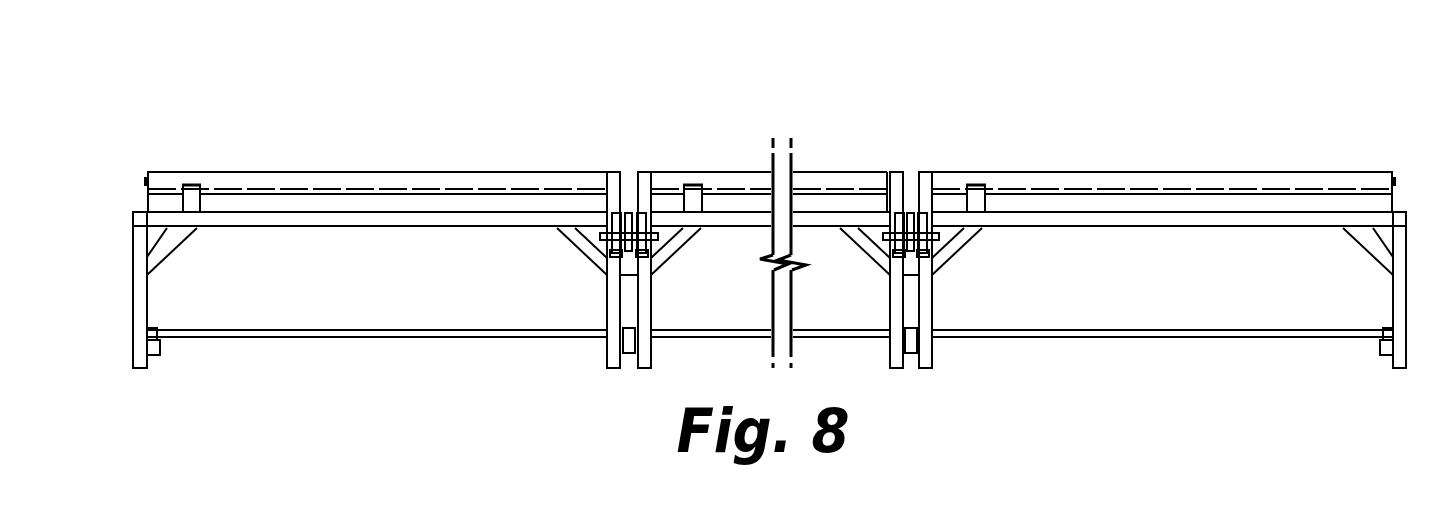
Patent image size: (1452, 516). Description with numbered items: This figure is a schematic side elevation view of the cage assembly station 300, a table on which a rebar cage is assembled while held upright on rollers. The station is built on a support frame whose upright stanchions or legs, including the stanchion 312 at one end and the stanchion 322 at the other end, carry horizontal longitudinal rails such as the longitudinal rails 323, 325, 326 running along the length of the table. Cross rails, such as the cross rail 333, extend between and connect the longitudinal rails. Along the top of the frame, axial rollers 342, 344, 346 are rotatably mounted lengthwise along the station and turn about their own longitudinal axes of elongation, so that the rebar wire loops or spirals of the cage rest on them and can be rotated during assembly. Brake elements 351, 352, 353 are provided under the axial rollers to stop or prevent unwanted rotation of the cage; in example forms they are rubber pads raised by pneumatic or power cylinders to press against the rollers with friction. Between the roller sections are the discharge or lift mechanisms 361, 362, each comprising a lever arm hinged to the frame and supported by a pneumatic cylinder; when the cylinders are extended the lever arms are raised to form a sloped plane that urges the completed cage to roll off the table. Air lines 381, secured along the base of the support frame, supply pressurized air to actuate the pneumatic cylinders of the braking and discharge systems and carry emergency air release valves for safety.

The cage assembly station 300 is at (1110, 66).
The upright stanchion 312 is at (138, 303).
The upright stanchion 322 is at (1400, 303).
The longitudinal rail 323 is at (447, 226).
The longitudinal rail 325 is at (737, 220).
The longitudinal rail 326 is at (1082, 222).
The cross rail 333 is at (157, 347).
The axial roller 342 is at (320, 178).
The axial roller 344 is at (825, 180).
The axial roller 346 is at (1195, 180).
The brake element 351 is at (197, 203).
The brake element 352 is at (698, 203).
The brake element 353 is at (985, 200).
The lift mechanism 361 is at (634, 203).
The lift mechanism 362 is at (910, 203).
The air line 381 is at (365, 338).